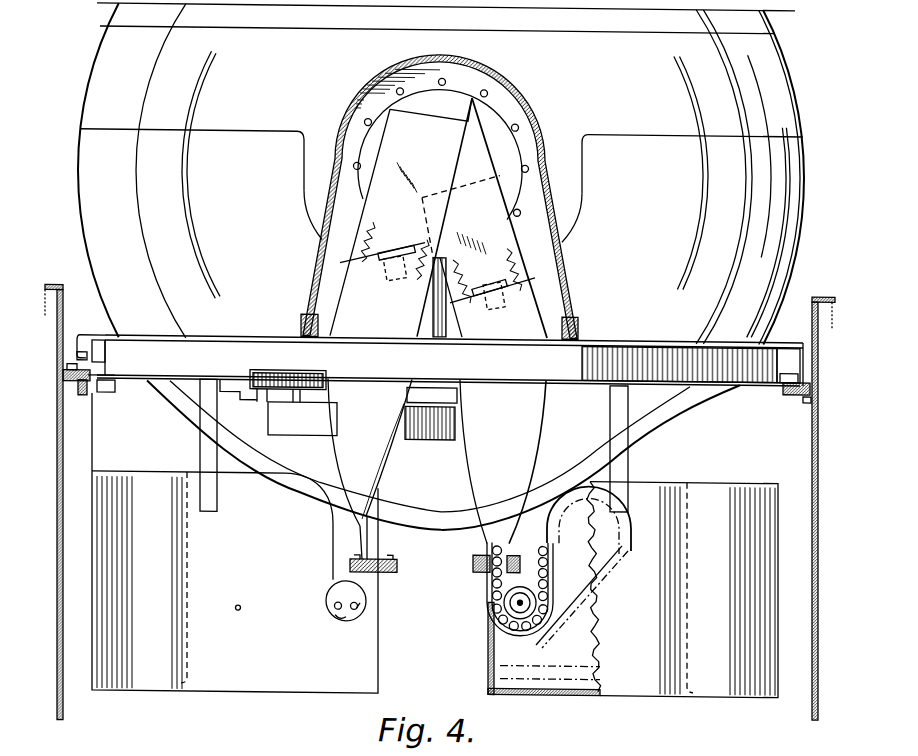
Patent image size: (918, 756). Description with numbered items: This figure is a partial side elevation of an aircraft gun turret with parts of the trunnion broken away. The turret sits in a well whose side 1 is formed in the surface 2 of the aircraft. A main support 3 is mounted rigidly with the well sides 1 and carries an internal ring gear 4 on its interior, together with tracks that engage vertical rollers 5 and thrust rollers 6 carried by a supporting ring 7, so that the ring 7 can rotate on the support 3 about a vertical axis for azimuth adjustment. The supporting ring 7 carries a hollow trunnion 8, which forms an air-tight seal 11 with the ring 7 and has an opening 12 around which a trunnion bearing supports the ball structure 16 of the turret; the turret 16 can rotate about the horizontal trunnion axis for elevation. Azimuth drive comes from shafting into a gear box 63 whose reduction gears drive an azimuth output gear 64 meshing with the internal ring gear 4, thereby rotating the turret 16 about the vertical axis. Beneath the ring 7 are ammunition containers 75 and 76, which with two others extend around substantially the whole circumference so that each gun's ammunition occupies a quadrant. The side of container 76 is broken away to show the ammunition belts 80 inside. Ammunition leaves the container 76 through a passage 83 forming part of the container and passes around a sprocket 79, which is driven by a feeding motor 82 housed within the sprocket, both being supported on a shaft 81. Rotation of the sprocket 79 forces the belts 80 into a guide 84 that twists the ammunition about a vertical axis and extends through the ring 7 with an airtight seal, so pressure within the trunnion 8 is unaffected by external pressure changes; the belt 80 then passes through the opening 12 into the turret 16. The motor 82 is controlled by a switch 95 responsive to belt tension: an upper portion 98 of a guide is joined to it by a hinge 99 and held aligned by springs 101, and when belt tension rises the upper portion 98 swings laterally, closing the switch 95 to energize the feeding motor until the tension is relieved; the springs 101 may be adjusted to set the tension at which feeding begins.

The side of the well 1 is at (64, 314).
The surface of an aircraft 2 is at (53, 283).
The main support 3 is at (63, 370).
The internal ring gear 4 is at (100, 394).
The vertical rollers 5 is at (82, 336).
The thrust rollers 6 is at (778, 381).
The supporting ring 7 is at (167, 333).
The hollow trunnion 8 is at (523, 89).
The air-tight seal 11 is at (583, 333).
The opening 12 is at (507, 134).
The ball structure 16 is at (81, 214).
The gear box 63 is at (293, 426).
The azimuth output gear 64 is at (266, 399).
The ammunition container 75 is at (235, 543).
The ammunition container 76 is at (637, 677).
The sprocket 79 is at (492, 618).
The ammunition belts 80 is at (545, 622).
The shaft 81 is at (514, 598).
The feeding motor 82 is at (488, 590).
The passage 83 is at (565, 478).
The guide 84 is at (497, 424).
The switch 95 is at (396, 278).
The upper portion of the guide 98 is at (343, 126).
The hinge 99 is at (385, 262).
The springs 101 is at (378, 250).